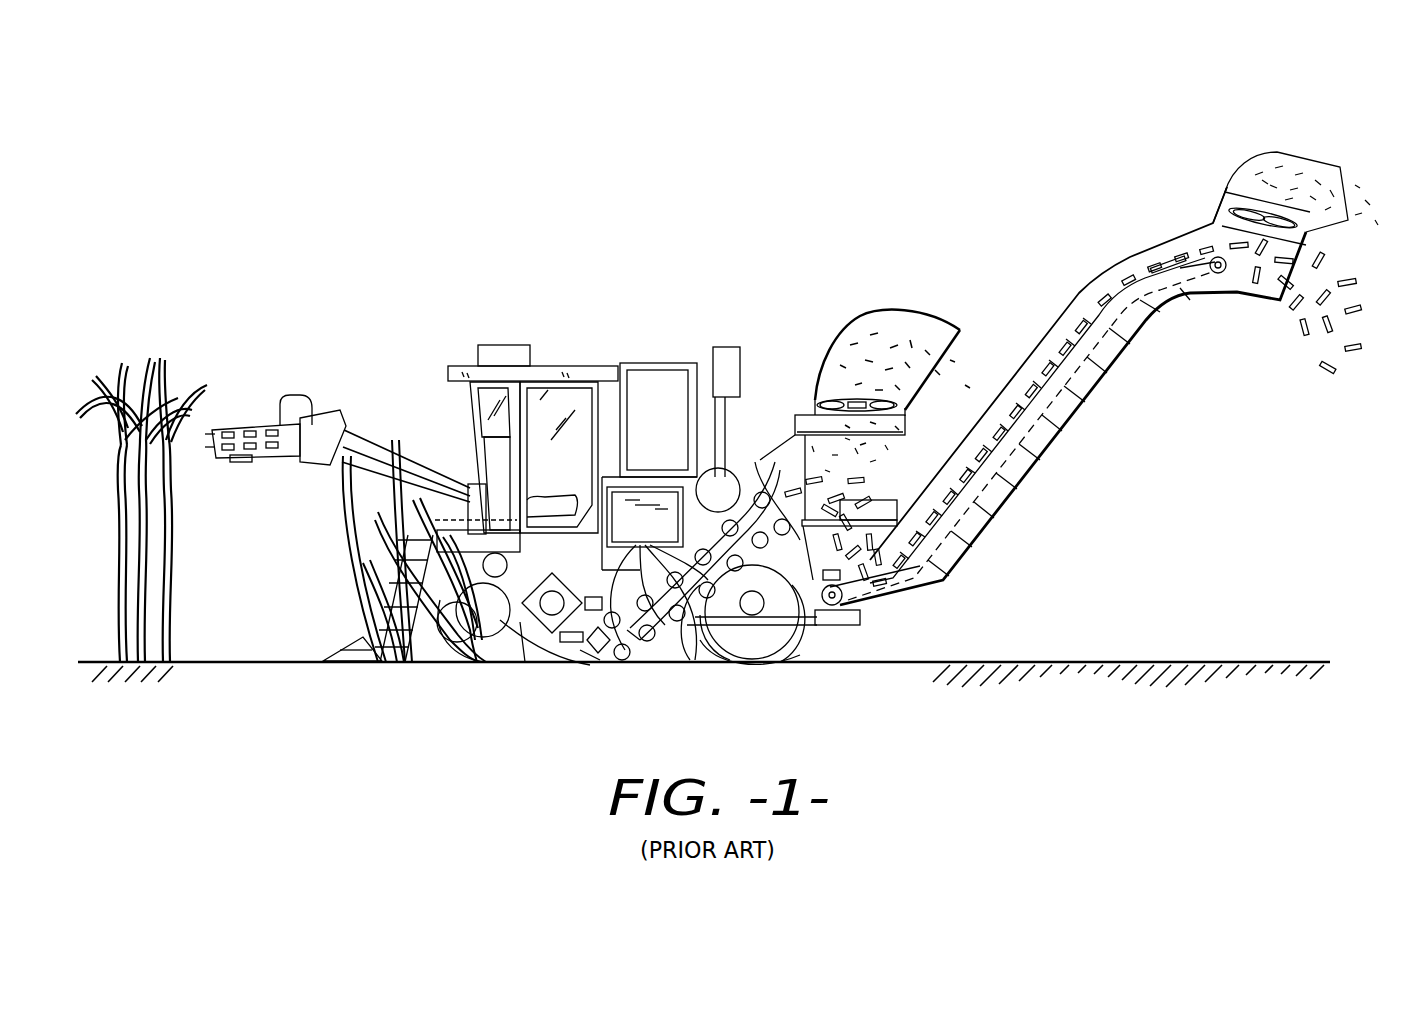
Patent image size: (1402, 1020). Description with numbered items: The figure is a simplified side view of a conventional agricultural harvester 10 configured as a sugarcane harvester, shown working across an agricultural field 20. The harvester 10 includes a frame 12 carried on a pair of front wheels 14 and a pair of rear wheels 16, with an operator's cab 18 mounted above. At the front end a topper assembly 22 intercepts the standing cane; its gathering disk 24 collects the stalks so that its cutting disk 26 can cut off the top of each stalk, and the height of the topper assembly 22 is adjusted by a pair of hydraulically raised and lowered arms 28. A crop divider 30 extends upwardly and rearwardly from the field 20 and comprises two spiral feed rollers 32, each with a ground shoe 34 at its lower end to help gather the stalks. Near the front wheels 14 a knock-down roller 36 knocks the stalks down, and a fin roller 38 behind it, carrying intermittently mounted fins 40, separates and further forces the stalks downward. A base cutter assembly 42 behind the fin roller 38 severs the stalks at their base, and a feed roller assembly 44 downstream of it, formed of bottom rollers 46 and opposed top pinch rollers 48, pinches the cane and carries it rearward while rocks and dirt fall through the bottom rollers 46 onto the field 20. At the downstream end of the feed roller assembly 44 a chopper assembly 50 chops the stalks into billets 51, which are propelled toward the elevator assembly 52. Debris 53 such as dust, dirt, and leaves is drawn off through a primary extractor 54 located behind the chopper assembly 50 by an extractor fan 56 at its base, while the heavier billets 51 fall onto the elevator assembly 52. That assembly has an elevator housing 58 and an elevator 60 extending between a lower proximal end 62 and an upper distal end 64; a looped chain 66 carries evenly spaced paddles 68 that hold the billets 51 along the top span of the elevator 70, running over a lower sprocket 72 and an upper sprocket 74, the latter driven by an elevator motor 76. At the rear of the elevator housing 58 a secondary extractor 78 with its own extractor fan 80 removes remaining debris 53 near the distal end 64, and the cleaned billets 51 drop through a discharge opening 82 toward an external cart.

The agricultural harvester 10 is at (414, 248).
The frame 12 is at (590, 583).
The front wheels 14 is at (472, 655).
The rear wheels 16 is at (780, 655).
The operator's cab 18 is at (588, 358).
The agricultural field 20 is at (243, 665).
The topper assembly 22 is at (312, 420).
The gathering disk 24 is at (222, 428).
The cutting disk 26 is at (246, 464).
The arms 28 is at (405, 472).
The crop divider 30 is at (356, 626).
The spiral feed rollers 32 is at (376, 664).
The ground shoe 34 is at (346, 662).
The knock-down roller 36 is at (506, 560).
The fin roller 38 is at (553, 662).
The fins 40 is at (535, 655).
The base cutter assembly 42 is at (596, 668).
The feed roller assembly 44 is at (672, 650).
The bottom rollers 46 is at (640, 660).
The top pinch rollers 48 is at (645, 517).
The chopper assembly 50 is at (780, 500).
The billets 51 is at (877, 494).
The elevator assembly 52 is at (1104, 359).
The debris 53 is at (905, 332).
The primary extractor 54 is at (1076, 324).
The extractor fan 56 is at (830, 400).
The elevator housing 58 is at (1070, 420).
The elevator 60 is at (1062, 365).
The proximal end 62 is at (878, 604).
The distal end 64 is at (1208, 240).
The looped chain 66 is at (1100, 404).
The paddles 68 is at (1118, 300).
The top span of the elevator 70 is at (1016, 398).
The lower sprocket 72 is at (845, 628).
The upper sprocket 74 is at (1155, 262).
The elevator motor 76 is at (1175, 266).
The secondary extractor 78 is at (1275, 150).
The extractor fan 80 is at (1243, 192).
The discharge opening 82 is at (1243, 296).